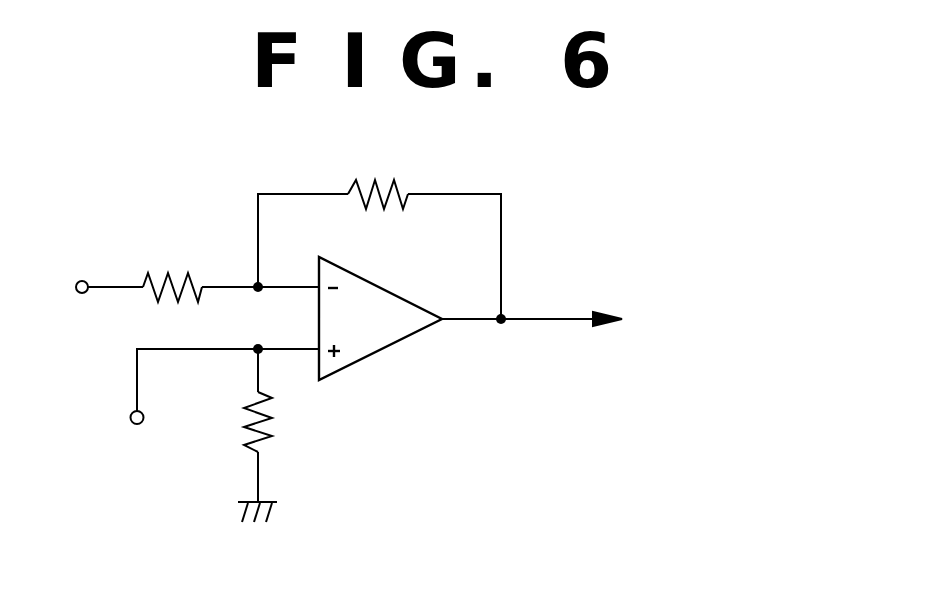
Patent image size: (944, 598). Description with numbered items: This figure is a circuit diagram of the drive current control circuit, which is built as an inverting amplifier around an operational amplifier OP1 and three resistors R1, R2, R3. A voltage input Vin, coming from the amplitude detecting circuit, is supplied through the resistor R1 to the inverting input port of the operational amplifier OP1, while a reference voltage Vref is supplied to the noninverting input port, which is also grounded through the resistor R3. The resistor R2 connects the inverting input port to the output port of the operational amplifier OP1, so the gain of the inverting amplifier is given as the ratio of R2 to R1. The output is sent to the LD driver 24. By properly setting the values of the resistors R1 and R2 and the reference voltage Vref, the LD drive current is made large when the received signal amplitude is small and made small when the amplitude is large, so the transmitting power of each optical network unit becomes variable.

The LD driver 24 is at (652, 315).
The operational amplifier OP1 is at (381, 318).
The resistor R1 is at (231, 276).
The resistor R2 is at (379, 237).
The resistor R3 is at (269, 435).
The voltage input Vin is at (84, 286).
The reference voltage Vref is at (212, 397).